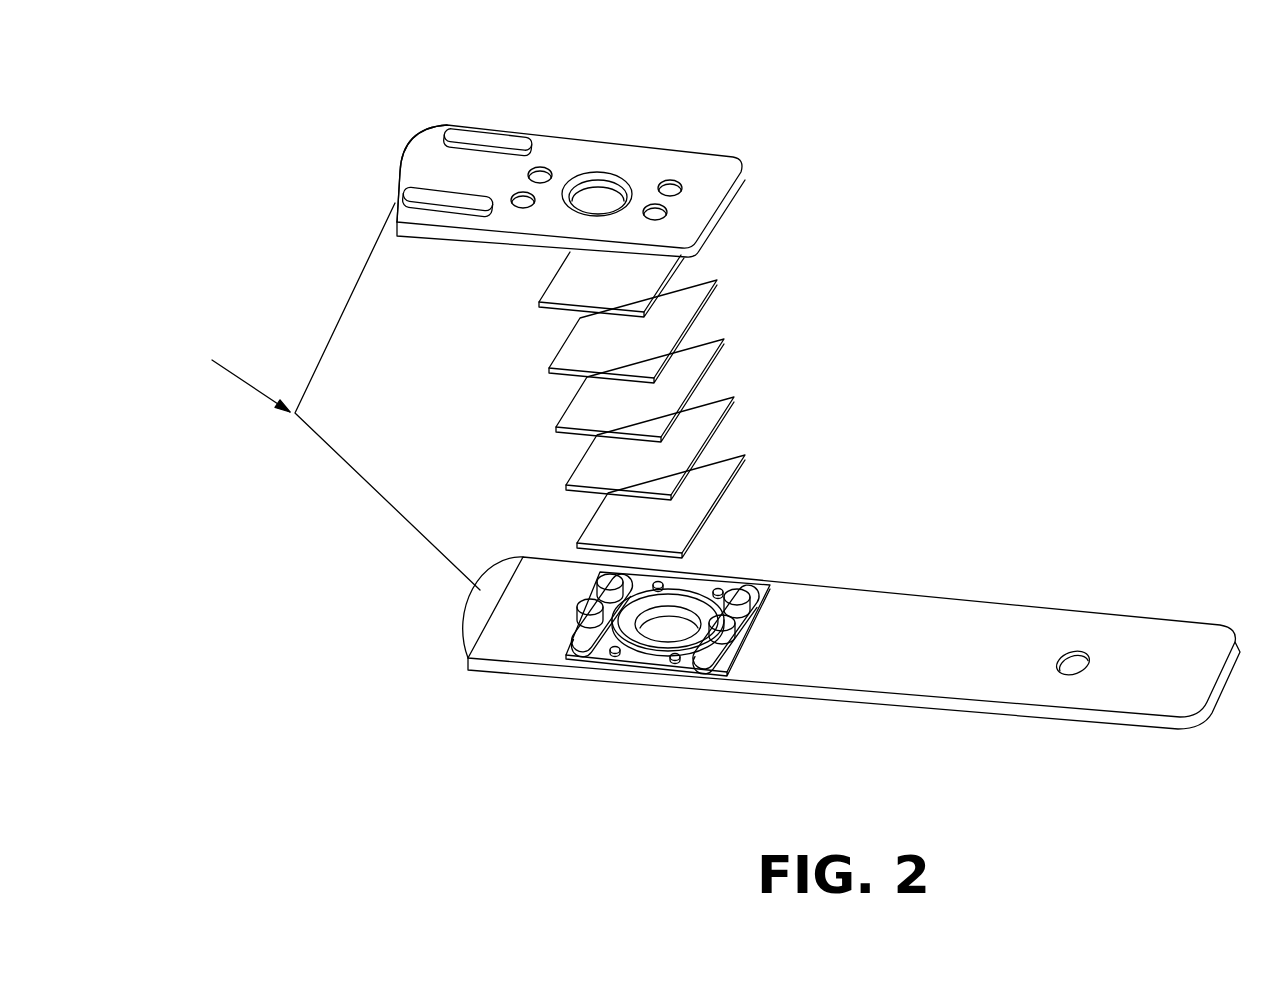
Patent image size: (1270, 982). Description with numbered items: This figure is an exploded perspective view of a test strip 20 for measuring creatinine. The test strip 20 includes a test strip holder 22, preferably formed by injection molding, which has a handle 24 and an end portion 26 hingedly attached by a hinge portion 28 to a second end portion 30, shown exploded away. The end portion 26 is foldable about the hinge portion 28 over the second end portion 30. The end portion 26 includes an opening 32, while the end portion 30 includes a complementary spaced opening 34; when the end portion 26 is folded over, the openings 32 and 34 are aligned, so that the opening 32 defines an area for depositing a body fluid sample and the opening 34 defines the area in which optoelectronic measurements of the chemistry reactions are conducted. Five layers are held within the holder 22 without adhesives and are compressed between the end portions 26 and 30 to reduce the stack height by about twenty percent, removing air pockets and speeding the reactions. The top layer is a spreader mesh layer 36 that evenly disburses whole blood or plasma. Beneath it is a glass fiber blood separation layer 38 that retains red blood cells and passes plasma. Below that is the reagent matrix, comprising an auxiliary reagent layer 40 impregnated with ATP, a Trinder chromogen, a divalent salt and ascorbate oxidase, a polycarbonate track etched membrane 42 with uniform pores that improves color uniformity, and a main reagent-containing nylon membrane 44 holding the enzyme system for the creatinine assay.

The test strip 20 is at (862, 142).
The test strip holder 22 is at (725, 145).
The handle 24 is at (1027, 678).
The end portion 26 is at (570, 155).
The hinge portion 28 is at (395, 205).
The second end portion 30 is at (504, 634).
The opening 32 is at (620, 195).
The complementary spaced opening 34 is at (623, 652).
The spreader mesh layer 36 is at (557, 272).
The blood separation layer 38 is at (570, 331).
The auxiliary reagent layer 40 is at (578, 382).
The polycarbonate track etched membrane 42 is at (596, 440).
The main reagent-containing membrane 44 is at (607, 498).